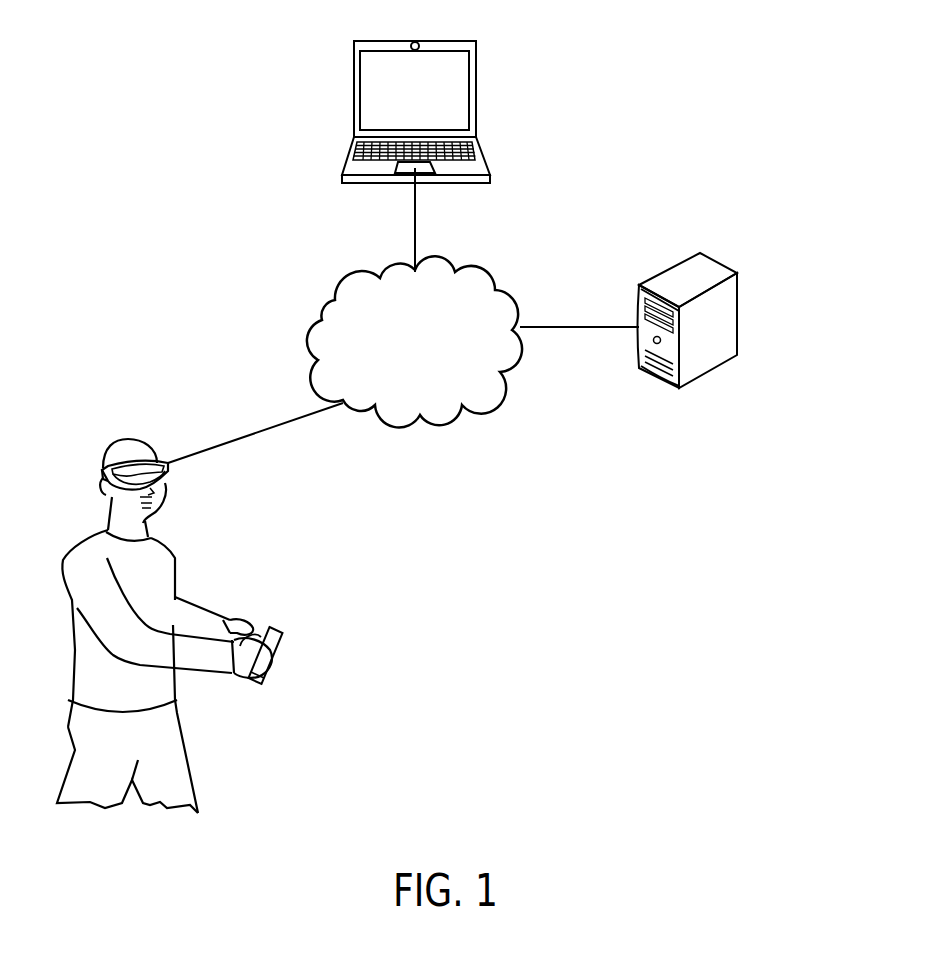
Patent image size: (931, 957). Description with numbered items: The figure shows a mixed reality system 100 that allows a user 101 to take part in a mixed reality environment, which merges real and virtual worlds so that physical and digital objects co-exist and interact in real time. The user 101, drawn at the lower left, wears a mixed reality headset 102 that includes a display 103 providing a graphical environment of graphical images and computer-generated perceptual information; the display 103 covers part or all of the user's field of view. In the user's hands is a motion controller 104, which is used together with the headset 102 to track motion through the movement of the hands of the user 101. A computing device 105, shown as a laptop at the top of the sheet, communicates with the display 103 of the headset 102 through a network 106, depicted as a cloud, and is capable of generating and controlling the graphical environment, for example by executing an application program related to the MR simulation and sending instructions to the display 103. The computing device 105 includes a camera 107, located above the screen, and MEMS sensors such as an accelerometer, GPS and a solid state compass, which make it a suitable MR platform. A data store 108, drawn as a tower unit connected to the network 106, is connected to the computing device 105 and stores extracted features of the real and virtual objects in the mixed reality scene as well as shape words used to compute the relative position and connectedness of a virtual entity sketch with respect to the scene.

The mixed reality system 100 is at (733, 89).
The user 101 is at (126, 440).
The mixed reality headset 102 is at (163, 462).
The display 103 is at (166, 483).
The motion controller 104 is at (283, 631).
The computing device 105 is at (445, 91).
The network 106 is at (503, 268).
The camera 107 is at (411, 44).
The data store 108 is at (737, 327).